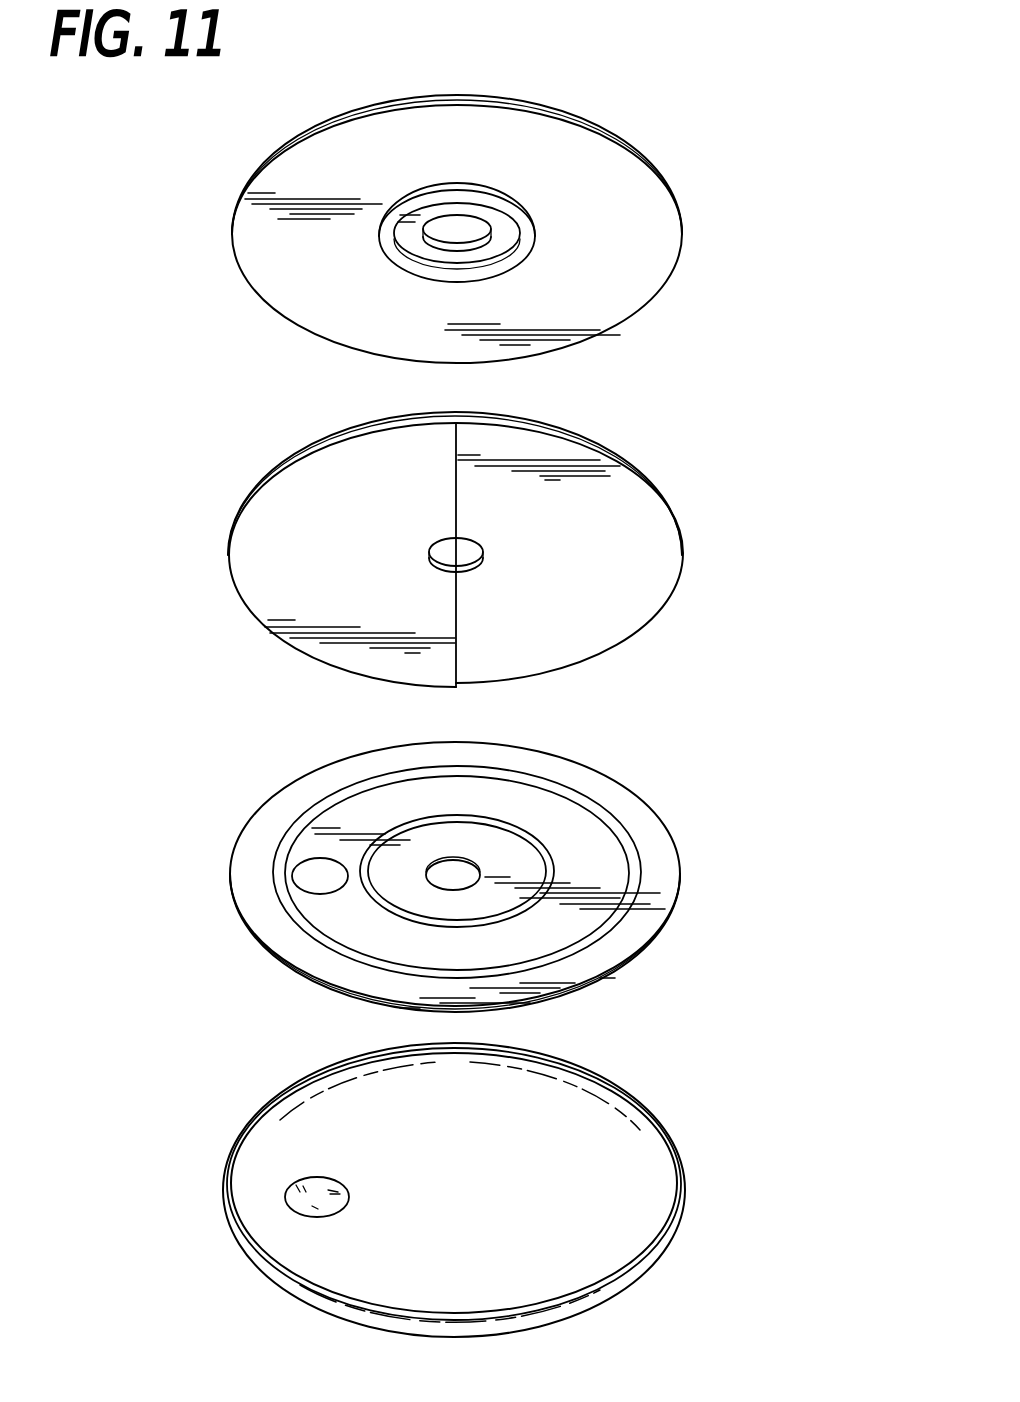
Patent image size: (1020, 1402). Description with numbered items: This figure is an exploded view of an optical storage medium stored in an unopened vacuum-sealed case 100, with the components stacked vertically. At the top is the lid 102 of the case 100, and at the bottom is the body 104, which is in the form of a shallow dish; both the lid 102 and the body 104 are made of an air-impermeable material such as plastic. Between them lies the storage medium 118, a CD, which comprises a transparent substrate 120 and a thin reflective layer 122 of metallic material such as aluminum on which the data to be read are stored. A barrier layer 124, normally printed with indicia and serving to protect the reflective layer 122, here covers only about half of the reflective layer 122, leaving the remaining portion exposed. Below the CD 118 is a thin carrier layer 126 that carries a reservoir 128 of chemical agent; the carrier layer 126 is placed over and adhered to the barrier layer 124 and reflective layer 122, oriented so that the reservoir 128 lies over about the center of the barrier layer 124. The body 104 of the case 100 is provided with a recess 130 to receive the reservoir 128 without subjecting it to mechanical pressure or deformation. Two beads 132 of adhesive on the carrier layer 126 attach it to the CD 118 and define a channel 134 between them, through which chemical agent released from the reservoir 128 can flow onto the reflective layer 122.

The case 100 is at (235, 674).
The lid 102 is at (670, 230).
The body 104 is at (504, 1190).
The storage medium 118 is at (447, 536).
The transparent substrate 120 is at (577, 438).
The reflective layer 122 is at (648, 598).
The barrier layer 124 is at (245, 562).
The carrier layer 126 is at (463, 861).
The reservoir 128 is at (302, 873).
The recess 130 is at (349, 1190).
The beads of adhesive 132 is at (567, 795).
The channel 134 is at (620, 868).